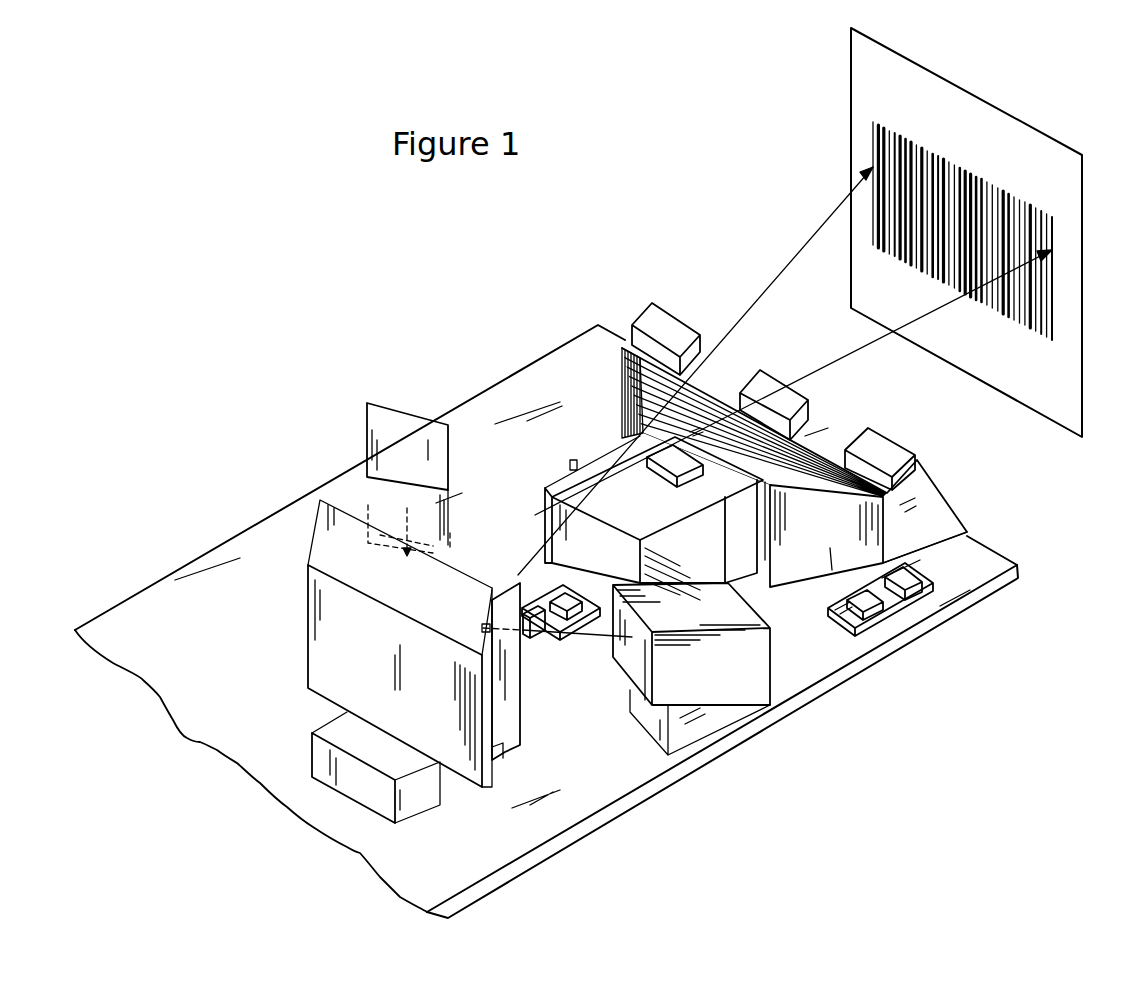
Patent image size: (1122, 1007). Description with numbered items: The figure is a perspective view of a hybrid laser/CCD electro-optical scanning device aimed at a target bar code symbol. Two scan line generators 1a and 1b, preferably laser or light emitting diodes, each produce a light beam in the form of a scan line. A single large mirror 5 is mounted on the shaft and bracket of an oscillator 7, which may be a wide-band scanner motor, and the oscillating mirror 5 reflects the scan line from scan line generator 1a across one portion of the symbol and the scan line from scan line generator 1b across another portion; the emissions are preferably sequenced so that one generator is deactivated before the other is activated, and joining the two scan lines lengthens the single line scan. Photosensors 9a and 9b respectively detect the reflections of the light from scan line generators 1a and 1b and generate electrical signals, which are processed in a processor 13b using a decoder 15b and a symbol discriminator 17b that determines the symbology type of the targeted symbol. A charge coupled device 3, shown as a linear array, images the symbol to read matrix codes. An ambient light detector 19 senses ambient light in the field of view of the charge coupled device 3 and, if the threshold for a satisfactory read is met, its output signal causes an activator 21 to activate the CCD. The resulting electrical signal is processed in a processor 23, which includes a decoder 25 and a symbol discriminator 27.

The scan line generator 1a is at (383, 403).
The scan line generator 1b is at (752, 692).
The charge coupled device 3 is at (702, 571).
The mirror 5 is at (505, 707).
The oscillator 7 is at (325, 598).
The photosensor 9a is at (661, 328).
The photosensor 9b is at (880, 448).
The processor 13b is at (887, 603).
The decoder 15b is at (925, 583).
The symbol discriminator 17b is at (853, 630).
The ambient light detector 19 is at (770, 385).
The activator 21 is at (687, 463).
The processor 23 is at (540, 605).
The decoder 25 is at (577, 610).
The symbol discriminator 27 is at (542, 630).